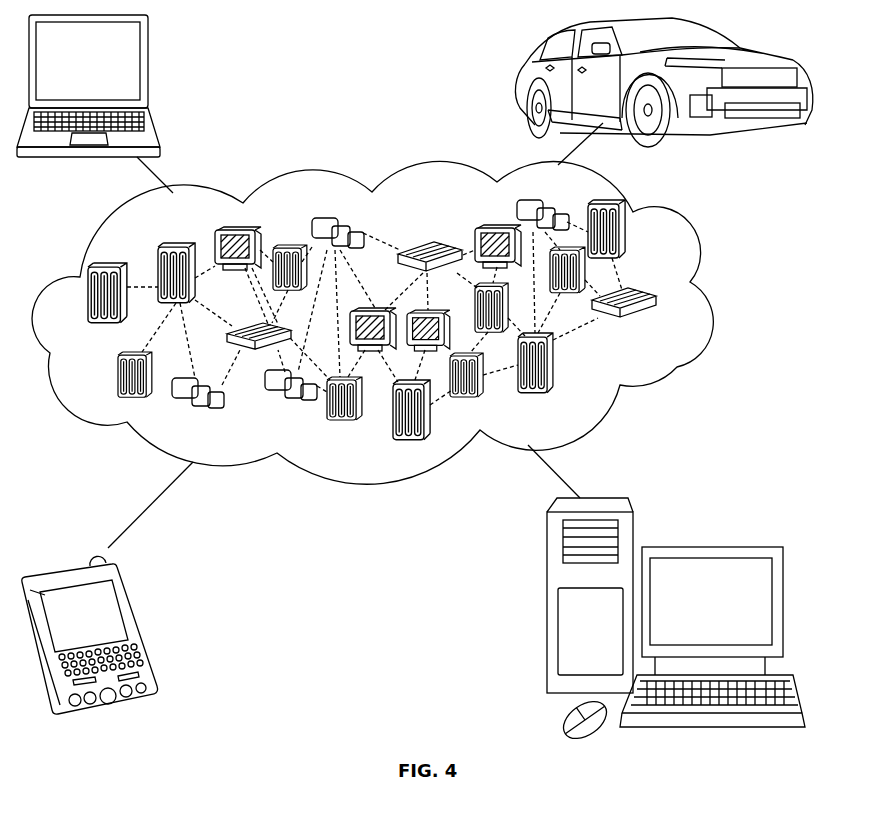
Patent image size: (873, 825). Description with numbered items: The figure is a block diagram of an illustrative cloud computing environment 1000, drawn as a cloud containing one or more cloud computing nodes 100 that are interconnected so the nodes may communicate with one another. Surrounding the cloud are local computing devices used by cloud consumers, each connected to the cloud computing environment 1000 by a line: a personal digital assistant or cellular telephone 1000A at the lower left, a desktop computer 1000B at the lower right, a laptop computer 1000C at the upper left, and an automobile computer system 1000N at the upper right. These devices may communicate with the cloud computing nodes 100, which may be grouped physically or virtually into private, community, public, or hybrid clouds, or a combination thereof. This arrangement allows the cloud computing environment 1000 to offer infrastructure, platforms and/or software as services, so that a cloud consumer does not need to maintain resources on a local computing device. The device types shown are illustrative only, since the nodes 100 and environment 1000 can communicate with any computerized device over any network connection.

The laptop computer 1000C is at (150, 69).
The automobile computer system 1000N is at (520, 83).
The cloud computing environment 1000 is at (708, 303).
The cloud computing nodes 100 is at (658, 327).
The personal digital assistant (PDA) or cellular telephone 1000A is at (140, 628).
The desktop computer 1000B is at (718, 528).